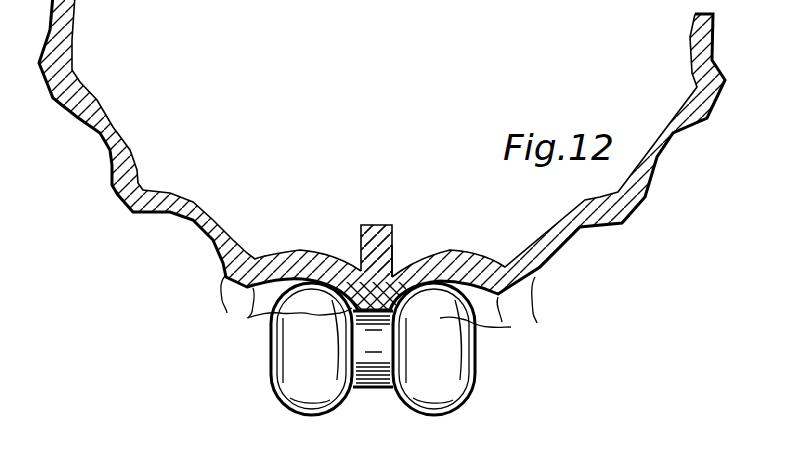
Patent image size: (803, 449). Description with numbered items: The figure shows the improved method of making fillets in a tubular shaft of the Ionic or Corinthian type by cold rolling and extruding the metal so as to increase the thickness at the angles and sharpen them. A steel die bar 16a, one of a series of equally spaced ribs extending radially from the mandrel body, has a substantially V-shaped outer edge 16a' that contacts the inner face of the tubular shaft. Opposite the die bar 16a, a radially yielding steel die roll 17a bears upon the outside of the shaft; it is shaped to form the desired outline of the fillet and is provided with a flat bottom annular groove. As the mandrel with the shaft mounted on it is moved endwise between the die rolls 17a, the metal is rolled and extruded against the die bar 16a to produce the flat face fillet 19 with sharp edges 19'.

The flat face fillet 19 is at (382, 155).
The sharp edge 19' is at (379, 307).
The die bar 16a is at (391, 236).
The V-shaped outer edge 16a' is at (416, 256).
The die roll 17a is at (370, 370).